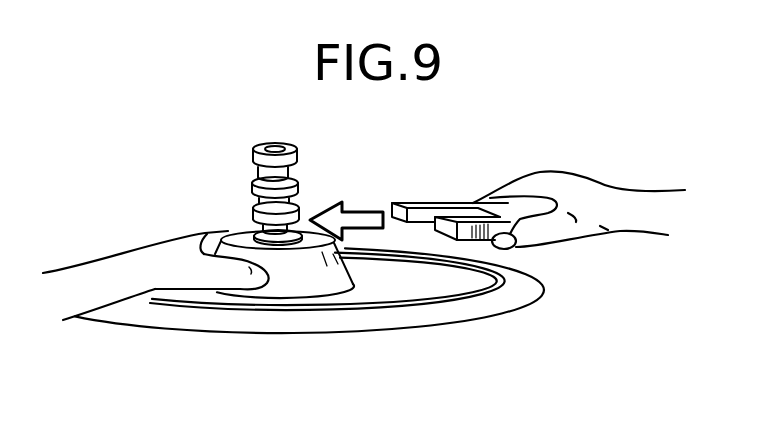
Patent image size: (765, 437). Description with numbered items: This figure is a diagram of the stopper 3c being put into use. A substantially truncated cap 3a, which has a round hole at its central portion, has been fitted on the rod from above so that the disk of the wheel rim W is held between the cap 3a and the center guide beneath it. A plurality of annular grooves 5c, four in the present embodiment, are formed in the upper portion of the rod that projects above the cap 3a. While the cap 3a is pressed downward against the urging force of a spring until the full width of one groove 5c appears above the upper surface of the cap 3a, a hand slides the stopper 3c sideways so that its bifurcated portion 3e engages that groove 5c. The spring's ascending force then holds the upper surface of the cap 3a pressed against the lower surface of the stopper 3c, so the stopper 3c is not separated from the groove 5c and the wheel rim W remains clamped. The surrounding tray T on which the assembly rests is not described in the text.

The cap 3a is at (292, 278).
The stopper 3c is at (446, 193).
The bifurcated portion 3e is at (416, 203).
The annular grooves 5c is at (262, 228).
The wheel rim W is at (401, 289).
The tray T is at (543, 290).